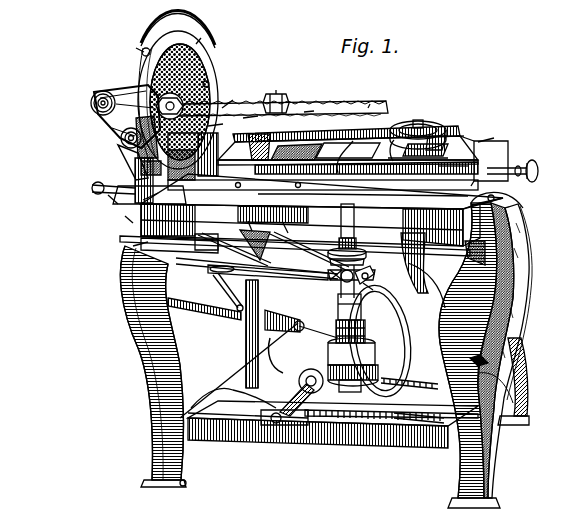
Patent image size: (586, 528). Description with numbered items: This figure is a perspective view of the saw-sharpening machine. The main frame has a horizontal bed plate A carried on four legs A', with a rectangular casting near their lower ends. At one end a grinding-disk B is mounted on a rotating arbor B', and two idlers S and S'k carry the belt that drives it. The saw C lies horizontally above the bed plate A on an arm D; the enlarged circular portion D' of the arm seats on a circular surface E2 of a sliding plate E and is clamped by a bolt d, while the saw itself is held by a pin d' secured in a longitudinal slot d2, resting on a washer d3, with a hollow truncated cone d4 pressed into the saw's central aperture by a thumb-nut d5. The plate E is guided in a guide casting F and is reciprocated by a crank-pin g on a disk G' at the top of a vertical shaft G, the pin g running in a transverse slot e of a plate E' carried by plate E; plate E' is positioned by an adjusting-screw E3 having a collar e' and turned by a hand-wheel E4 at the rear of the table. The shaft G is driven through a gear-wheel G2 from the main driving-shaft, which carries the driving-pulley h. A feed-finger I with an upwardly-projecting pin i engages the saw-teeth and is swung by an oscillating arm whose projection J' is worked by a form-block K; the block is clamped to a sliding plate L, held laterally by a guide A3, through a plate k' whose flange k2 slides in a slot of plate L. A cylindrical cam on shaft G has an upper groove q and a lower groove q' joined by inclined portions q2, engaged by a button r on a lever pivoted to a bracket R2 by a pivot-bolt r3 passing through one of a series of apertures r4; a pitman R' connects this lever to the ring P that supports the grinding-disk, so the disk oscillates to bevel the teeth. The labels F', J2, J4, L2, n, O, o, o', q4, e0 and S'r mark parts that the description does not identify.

The bed plate A is at (311, 219).
The supporting legs A' is at (331, 350).
The guide or stop A3 is at (117, 208).
The grinding-disk B is at (178, 100).
The rotating arbor B' is at (110, 137).
The saw C is at (316, 95).
The arm D is at (418, 126).
The circular portion of arm D' is at (446, 130).
The pivot bolt d is at (431, 115).
The saw-holding bolt or pin d' is at (287, 80).
The longitudinal slot d2 is at (362, 100).
The washer d3 is at (252, 123).
The hollow truncated cone d4 is at (310, 116).
The thumb-nut d5 is at (267, 85).
The sliding plate E is at (363, 154).
The slotted plate E' is at (409, 389).
The circular surface E2 is at (466, 114).
The adjusting-screw E3 is at (506, 160).
The hand-wheel E4 is at (531, 166).
The transverse slot e is at (345, 159).
The collar e' is at (464, 128).
The screw e0 is at (488, 130).
The guide plate F is at (418, 180).
The slide F' is at (388, 200).
The vertical shaft G is at (377, 347).
The disk G' is at (286, 192).
The gear-wheel G2 is at (400, 360).
The crank-pin g is at (398, 150).
The driving-pulley h is at (302, 361).
The pin i is at (230, 97).
The feed-finger I is at (212, 120).
The ring P is at (193, 156).
The projection J' is at (283, 223).
The lower frame J2 is at (338, 430).
The guide J4 is at (248, 220).
The form-block K is at (146, 236).
The clamping plate k' is at (125, 248).
The lip or flange k2 is at (135, 192).
The sliding plate L is at (100, 188).
The lever pivot L2 is at (86, 177).
The rod n is at (305, 410).
The guard O is at (138, 40).
The pin o is at (378, 276).
The pin o' is at (167, 38).
The upper cam-groove q is at (354, 251).
The lower cam-groove q' is at (384, 288).
The inclined groove portion q2 is at (318, 260).
The clutch q4 is at (330, 304).
The pitman R' is at (257, 280).
The bracket R2 is at (228, 302).
The button r is at (379, 340).
The pivot-bolt r3 is at (268, 266).
The apertures r4 is at (219, 276).
The idler S is at (114, 116).
The idler S'k is at (145, 160).
The link S'r is at (215, 292).